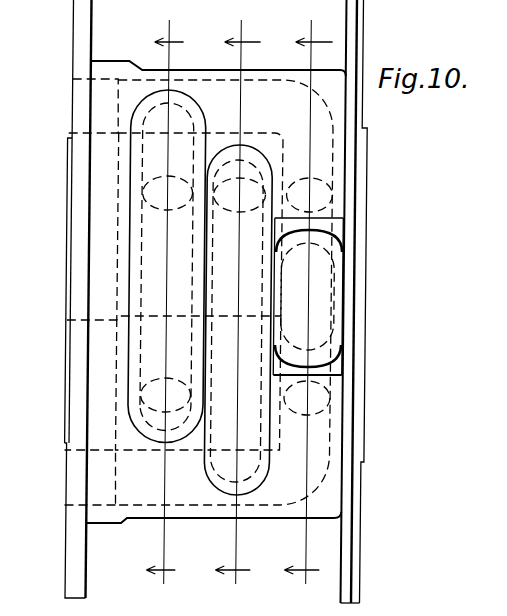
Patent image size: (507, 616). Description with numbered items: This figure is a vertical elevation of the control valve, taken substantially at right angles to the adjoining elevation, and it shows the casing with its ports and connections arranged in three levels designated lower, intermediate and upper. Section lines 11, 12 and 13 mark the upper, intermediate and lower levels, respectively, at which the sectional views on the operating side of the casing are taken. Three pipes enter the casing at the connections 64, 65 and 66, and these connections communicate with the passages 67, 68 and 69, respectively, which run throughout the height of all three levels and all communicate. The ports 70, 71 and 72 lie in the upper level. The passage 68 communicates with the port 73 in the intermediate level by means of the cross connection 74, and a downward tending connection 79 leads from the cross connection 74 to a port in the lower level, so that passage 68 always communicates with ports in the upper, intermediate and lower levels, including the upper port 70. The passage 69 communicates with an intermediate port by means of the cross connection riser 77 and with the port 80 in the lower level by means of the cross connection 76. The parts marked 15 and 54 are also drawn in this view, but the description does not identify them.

The section line 11 is at (308, 304).
The section line 12 is at (237, 304).
The section line 13 is at (165, 304).
The cross bar 15 is at (276, 375).
The slide body 54 is at (74, 538).
The connection 64 is at (65, 285).
The connection 65 is at (66, 487).
The connection 66 is at (72, 108).
The passage 67 is at (117, 272).
The passage 68 is at (150, 488).
The passage 69 is at (217, 100).
The port 70 is at (322, 398).
The port 71 is at (322, 313).
The port 72 is at (325, 195).
The port 73 is at (247, 190).
The cross connection 74 is at (228, 360).
The cross connection 76 is at (150, 342).
The cross connection riser 77 is at (142, 195).
The downward tending connection 79 is at (140, 400).
The port 80 is at (172, 138).